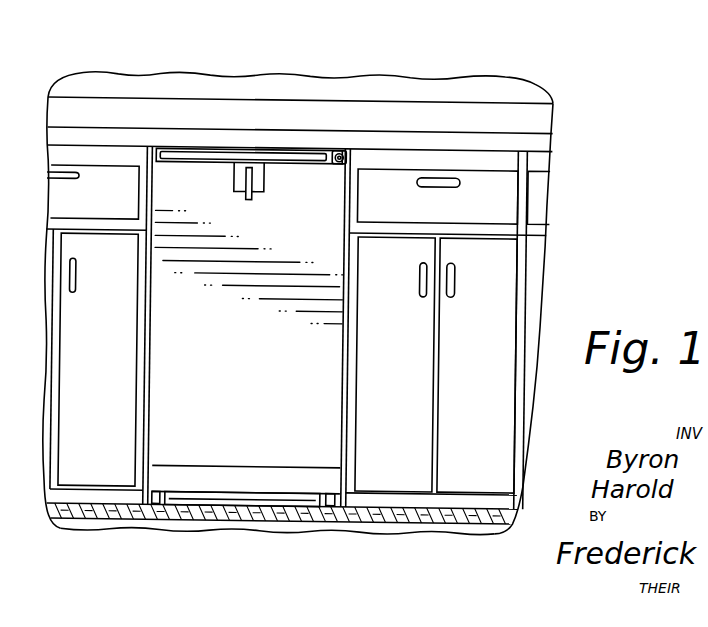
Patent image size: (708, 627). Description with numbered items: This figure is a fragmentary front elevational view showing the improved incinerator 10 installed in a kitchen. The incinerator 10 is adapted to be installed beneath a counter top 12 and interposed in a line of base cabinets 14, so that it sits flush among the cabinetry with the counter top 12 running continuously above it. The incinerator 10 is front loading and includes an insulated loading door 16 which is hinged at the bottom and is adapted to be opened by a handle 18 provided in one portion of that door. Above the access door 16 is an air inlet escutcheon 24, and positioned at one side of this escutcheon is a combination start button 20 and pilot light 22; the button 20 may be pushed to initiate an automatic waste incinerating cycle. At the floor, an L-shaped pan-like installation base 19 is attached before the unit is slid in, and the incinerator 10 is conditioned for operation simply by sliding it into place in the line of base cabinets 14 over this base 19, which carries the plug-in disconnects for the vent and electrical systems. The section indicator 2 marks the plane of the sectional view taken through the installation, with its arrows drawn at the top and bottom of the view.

The incinerator 10 is at (198, 148).
The counter top 12 is at (452, 133).
The base cabinets 14 is at (538, 157).
The insulated loading door 16 is at (163, 313).
The handle 18 is at (254, 194).
The installation base 19 is at (218, 501).
The start button 20 is at (337, 151).
The pilot light 22 is at (346, 156).
The air inlet escutcheon 24 is at (177, 153).
The section line 2- 2 is at (348, 145).